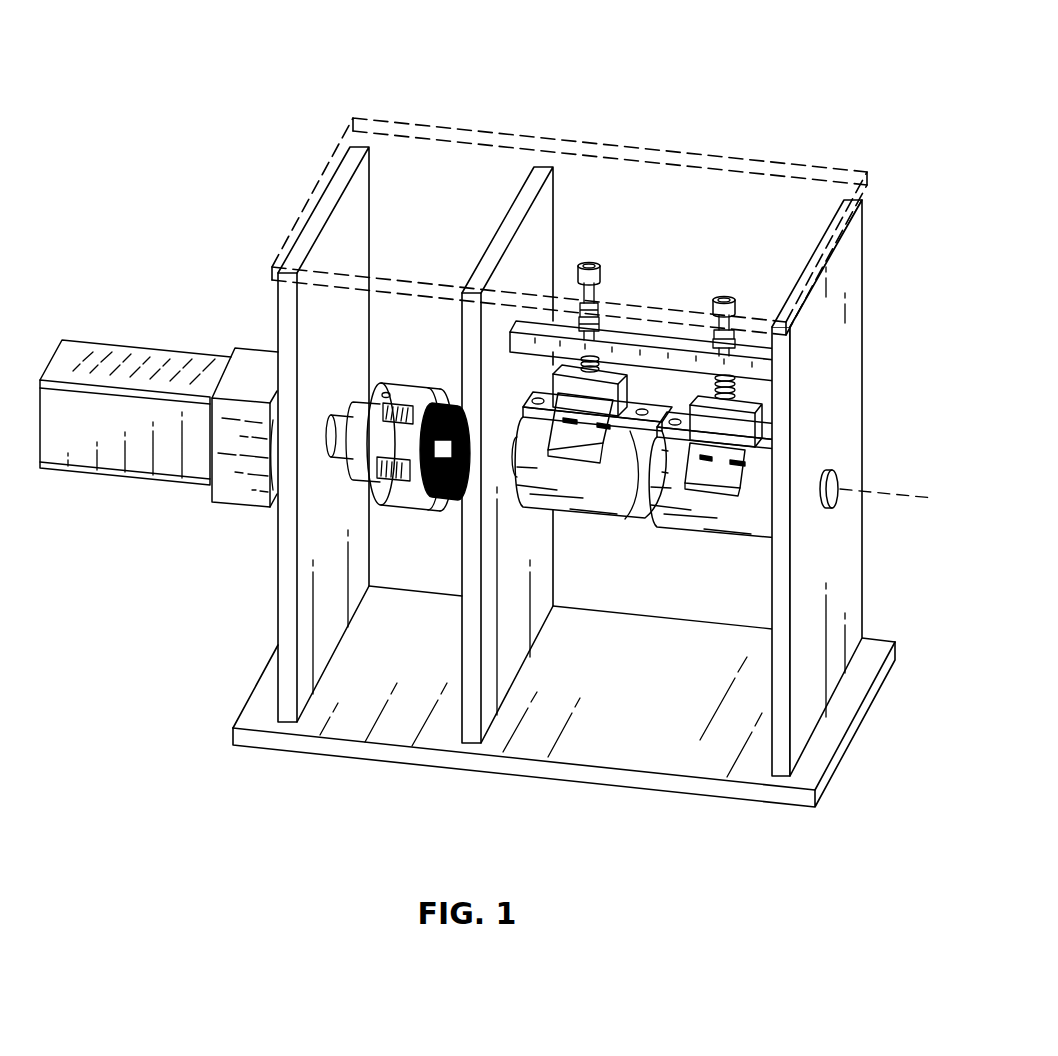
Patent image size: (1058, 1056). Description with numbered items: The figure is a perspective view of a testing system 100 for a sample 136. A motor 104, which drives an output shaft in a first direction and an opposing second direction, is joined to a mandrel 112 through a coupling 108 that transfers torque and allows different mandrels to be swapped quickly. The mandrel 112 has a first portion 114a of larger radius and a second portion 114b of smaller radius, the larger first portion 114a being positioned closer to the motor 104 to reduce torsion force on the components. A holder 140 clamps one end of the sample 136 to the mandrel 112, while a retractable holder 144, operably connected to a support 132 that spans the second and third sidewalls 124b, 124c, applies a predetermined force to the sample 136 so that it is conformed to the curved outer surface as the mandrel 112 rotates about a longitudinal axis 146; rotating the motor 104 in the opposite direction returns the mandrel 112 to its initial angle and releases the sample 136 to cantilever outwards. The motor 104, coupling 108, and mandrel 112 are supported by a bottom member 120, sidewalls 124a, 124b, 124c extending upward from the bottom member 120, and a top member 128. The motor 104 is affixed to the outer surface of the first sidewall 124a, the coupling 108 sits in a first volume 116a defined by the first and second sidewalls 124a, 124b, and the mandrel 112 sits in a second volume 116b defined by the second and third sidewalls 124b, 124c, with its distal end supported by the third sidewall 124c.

The testing system 100 is at (250, 30).
The motor 104 is at (97, 352).
The coupling 108 is at (395, 442).
The mandrel 112 is at (625, 503).
The first portion 114a is at (613, 497).
The second portion 114b is at (710, 497).
The first volume 116a is at (457, 178).
The second volume 116b is at (610, 188).
The bottom member 120 is at (383, 637).
The first sidewall 124a is at (283, 713).
The second sidewall 124b is at (471, 731).
The third sidewall 124c is at (778, 755).
The top member 128 is at (768, 188).
The support 132 is at (750, 372).
The sample 136 is at (607, 443).
The holder 140 is at (630, 423).
The retractable holder 144 is at (601, 392).
The longitudinal axis 146 is at (878, 490).